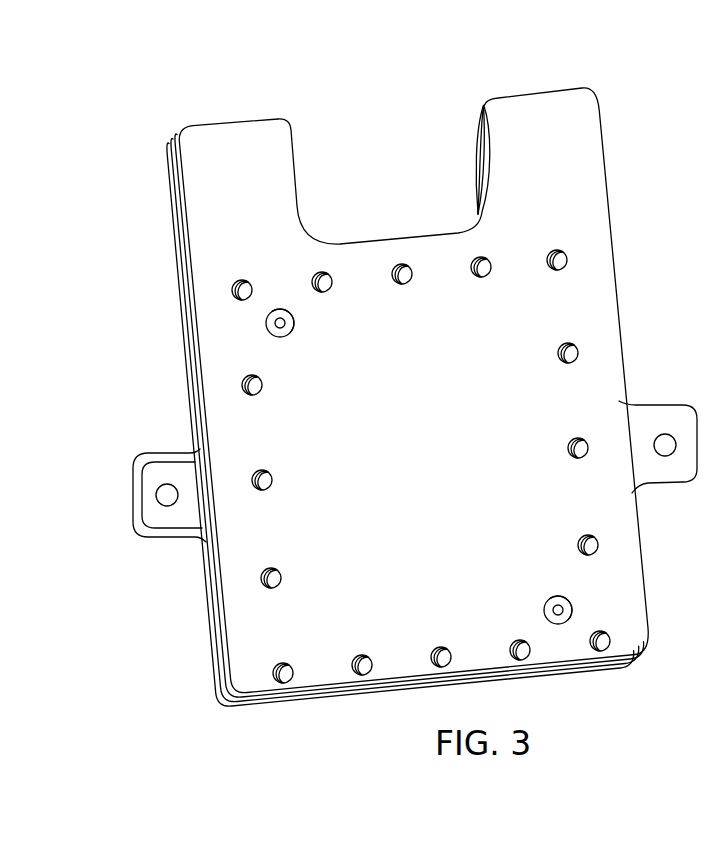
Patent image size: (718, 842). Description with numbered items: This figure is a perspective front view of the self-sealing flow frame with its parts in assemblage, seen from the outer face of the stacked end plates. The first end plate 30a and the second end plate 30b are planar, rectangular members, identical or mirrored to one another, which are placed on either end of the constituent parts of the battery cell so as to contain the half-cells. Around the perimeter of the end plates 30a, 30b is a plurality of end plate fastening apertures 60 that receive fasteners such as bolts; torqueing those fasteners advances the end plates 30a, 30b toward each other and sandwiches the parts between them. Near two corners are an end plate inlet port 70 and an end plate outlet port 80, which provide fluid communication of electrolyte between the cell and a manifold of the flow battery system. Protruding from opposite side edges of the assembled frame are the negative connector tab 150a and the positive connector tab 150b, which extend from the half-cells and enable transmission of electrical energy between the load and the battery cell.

The first end plate 30a is at (162, 107).
The second end plate 30b is at (405, 406).
The end plate fastening apertures 60 is at (268, 684).
The end plate inlet port 70 is at (266, 325).
The end plate outlet port 80 is at (573, 611).
The negative connector tab 150a is at (163, 539).
The positive connector tab 150b is at (653, 404).